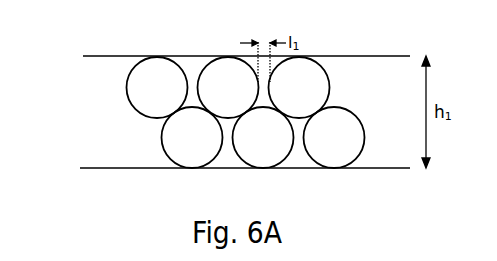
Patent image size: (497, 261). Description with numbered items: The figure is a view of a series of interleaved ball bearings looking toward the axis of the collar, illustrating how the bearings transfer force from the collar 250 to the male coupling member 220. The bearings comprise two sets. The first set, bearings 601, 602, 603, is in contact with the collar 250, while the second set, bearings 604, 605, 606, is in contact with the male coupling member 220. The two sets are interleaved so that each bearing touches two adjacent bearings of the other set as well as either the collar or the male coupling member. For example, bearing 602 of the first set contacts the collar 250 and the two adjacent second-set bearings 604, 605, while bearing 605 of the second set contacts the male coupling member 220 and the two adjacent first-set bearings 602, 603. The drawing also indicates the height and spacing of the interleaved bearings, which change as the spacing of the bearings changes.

The collar 250 is at (380, 57).
The male coupling member 220 is at (385, 168).
The bearing 601 is at (126, 78).
The bearing 602 is at (195, 72).
The bearing 603 is at (328, 77).
The bearing 604 is at (162, 157).
The bearing 605 is at (285, 160).
The bearing 606 is at (312, 162).